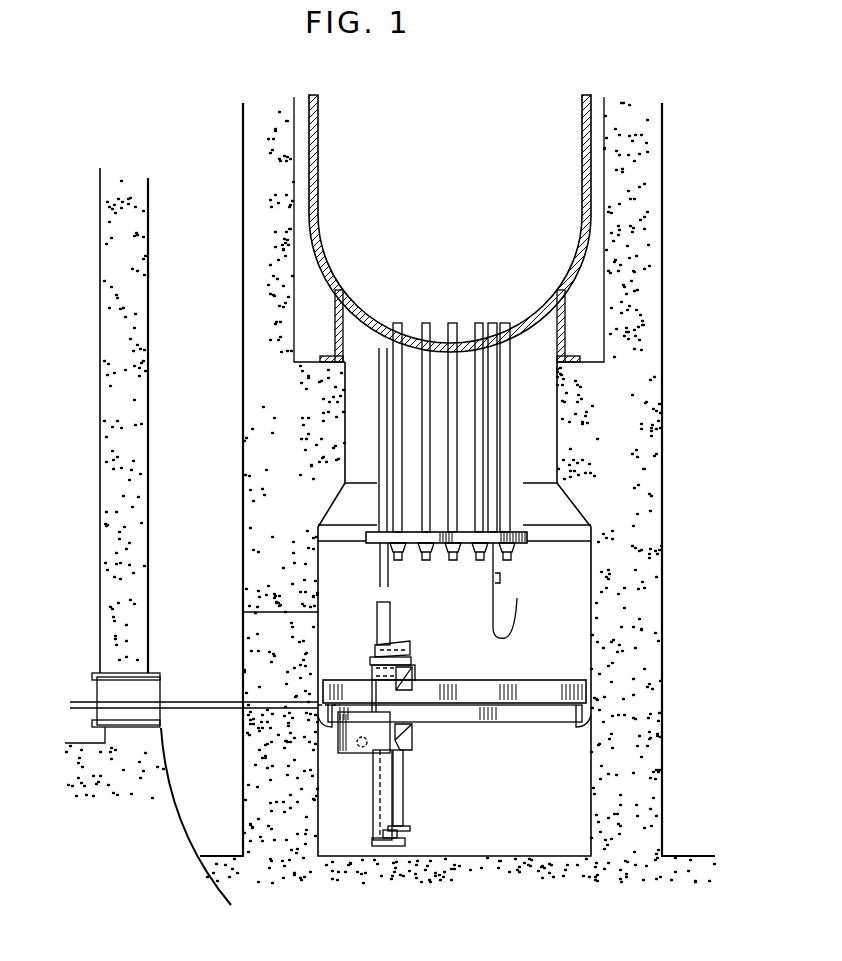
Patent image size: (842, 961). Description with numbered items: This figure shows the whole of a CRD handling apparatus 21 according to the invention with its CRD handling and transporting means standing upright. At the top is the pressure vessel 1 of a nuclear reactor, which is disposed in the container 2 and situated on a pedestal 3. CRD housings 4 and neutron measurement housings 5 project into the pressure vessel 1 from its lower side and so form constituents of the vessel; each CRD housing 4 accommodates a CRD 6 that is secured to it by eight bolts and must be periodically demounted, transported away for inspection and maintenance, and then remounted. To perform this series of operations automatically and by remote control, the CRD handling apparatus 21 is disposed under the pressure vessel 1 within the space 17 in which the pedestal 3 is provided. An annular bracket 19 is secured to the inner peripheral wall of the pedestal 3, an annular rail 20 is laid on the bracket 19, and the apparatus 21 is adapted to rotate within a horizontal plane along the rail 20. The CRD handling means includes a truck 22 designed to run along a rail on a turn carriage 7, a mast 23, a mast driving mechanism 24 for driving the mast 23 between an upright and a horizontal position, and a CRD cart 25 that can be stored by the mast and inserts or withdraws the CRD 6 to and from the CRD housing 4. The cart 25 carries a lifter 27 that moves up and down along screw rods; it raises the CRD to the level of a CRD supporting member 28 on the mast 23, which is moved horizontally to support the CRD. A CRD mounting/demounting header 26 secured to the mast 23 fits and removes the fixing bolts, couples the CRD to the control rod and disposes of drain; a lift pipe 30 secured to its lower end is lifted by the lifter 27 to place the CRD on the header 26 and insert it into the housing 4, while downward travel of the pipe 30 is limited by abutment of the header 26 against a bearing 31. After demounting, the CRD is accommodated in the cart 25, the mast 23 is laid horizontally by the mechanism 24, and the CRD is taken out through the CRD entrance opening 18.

The pressure vessel 1 is at (590, 193).
The container 2 is at (140, 368).
The pedestal 3 is at (662, 497).
The CRD housing 4 is at (506, 390).
The neutron measurement housing 5 is at (493, 426).
The CRD 6 is at (420, 550).
The turn carriage 7 is at (582, 680).
The space 17 is at (568, 788).
The CRD entrance opening 18 is at (268, 642).
The bracket 19 is at (582, 728).
The annular rail 20 is at (588, 710).
The CRD handling apparatus 21 is at (372, 792).
The truck 22 is at (355, 752).
The mast 23 is at (372, 672).
The mast driving mechanism 24 is at (345, 733).
The CRD cart 25 is at (381, 604).
The CRD mounting/demounting header 26 is at (400, 688).
The lifter 27 is at (385, 838).
The CRD supporting member 28 is at (407, 645).
The lift pipe 30 is at (405, 797).
The bearing 31 is at (415, 735).